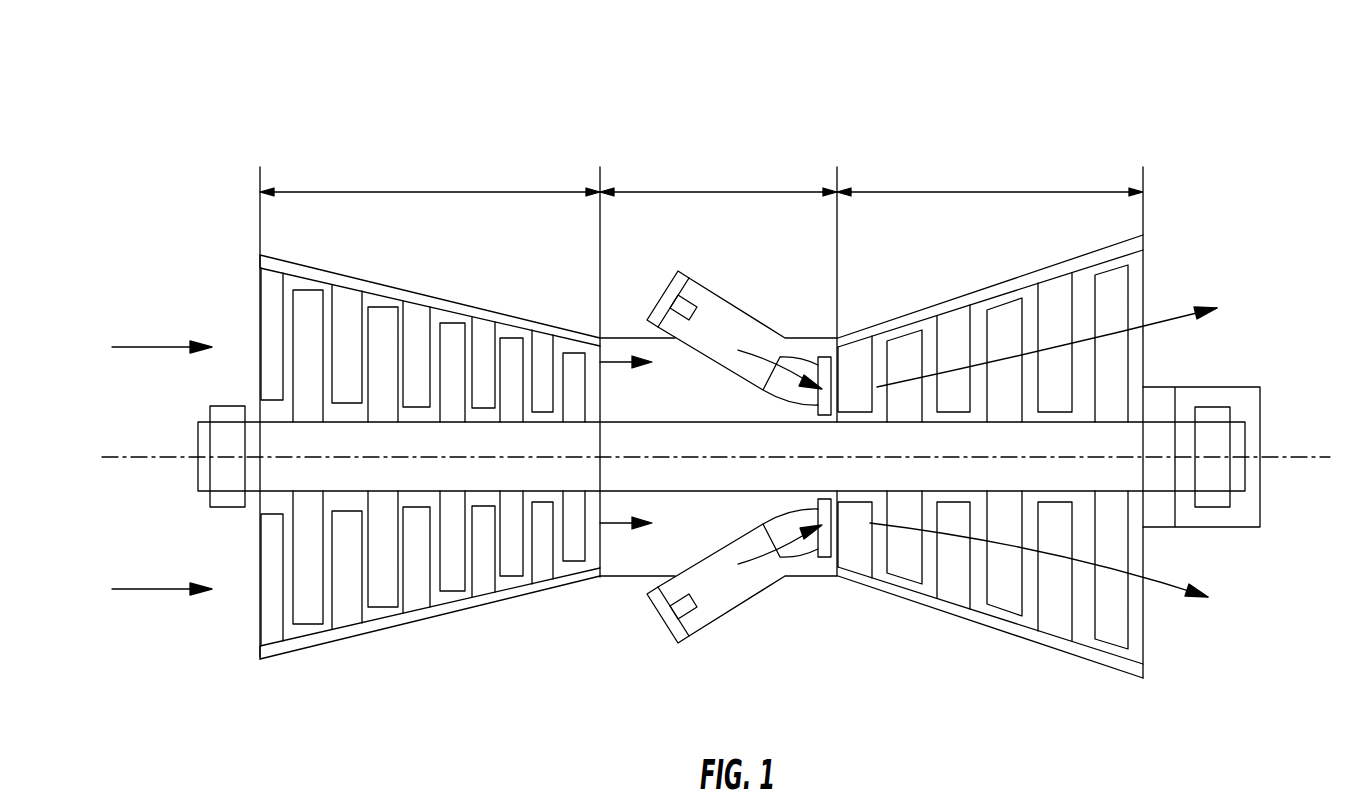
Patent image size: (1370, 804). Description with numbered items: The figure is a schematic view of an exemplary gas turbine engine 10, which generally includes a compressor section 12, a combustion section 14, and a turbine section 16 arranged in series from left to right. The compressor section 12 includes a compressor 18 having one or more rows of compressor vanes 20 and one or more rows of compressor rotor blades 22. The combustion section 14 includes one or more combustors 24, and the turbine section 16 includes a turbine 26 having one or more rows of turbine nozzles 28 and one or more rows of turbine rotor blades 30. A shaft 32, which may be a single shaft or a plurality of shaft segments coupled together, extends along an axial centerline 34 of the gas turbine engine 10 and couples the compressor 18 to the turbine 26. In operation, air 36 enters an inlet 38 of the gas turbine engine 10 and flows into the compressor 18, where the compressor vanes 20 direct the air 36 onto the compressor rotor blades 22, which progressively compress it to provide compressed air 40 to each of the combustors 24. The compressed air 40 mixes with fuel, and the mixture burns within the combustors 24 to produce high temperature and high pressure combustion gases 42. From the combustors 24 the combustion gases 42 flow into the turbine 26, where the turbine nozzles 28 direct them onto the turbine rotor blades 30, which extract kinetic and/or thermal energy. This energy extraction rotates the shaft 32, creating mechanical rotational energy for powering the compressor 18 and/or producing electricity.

The gas turbine engine 10 is at (655, 87).
The compressor section 12 is at (432, 192).
The combustion section 14 is at (695, 192).
The turbine section 16 is at (955, 192).
The compressor 18 is at (280, 660).
The compressor vanes 20 is at (345, 330).
The compressor rotor blades 22 is at (385, 585).
The combustors 24 is at (697, 283).
The turbine 26 is at (968, 625).
The turbine nozzles 28 is at (1055, 308).
The turbine rotor blades 30 is at (1003, 580).
The shaft 32 is at (642, 430).
The axial centerline 34 is at (152, 457).
The air 36 is at (138, 347).
The inlet 38 is at (258, 327).
The compressed air 40 is at (615, 362).
The combustion gases 42 is at (1163, 318).